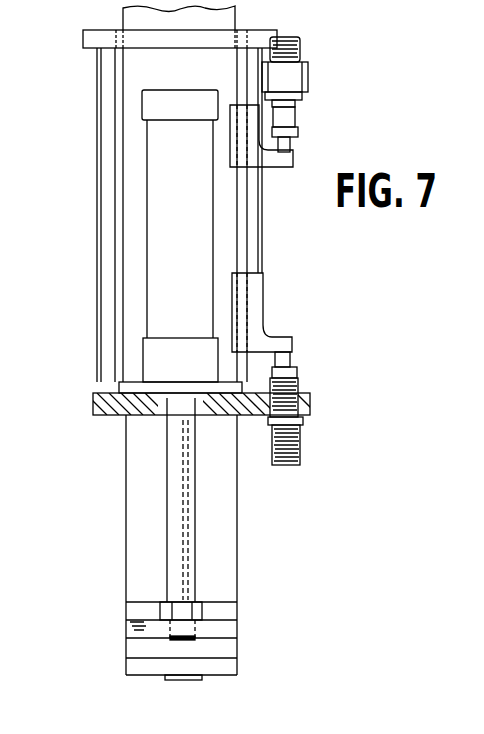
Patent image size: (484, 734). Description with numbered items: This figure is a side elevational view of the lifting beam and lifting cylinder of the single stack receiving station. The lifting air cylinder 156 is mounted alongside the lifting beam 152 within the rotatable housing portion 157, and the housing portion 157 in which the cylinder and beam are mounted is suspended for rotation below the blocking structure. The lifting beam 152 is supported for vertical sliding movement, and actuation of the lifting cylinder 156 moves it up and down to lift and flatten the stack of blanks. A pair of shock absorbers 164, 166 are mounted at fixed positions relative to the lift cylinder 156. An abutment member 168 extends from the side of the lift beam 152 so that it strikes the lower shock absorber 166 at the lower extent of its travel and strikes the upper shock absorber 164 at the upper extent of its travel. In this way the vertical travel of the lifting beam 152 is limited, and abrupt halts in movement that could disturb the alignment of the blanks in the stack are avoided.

The lifting bar 152 is at (126, 508).
The lifting air cylinder 156 is at (147, 232).
The rotatable housing portion 157 is at (83, 38).
The upper shock absorber 164 is at (295, 118).
The lower shock absorber 166 is at (298, 386).
The abutment member 168 is at (263, 330).